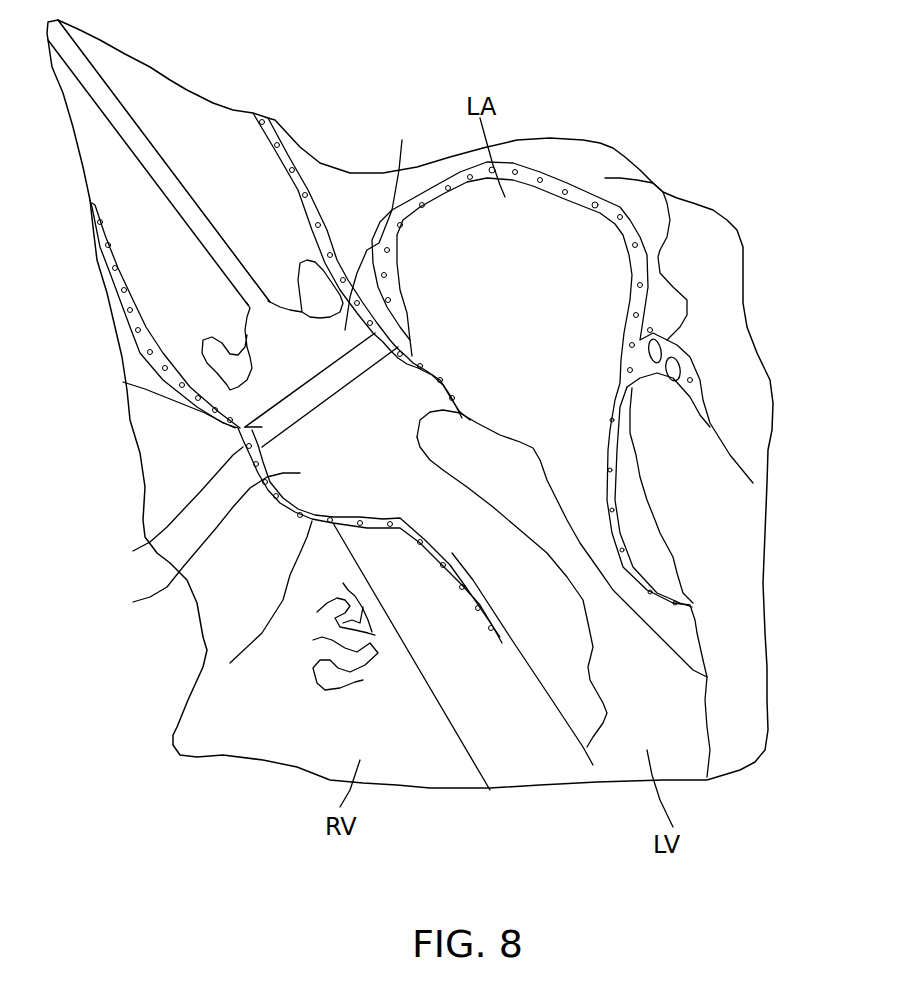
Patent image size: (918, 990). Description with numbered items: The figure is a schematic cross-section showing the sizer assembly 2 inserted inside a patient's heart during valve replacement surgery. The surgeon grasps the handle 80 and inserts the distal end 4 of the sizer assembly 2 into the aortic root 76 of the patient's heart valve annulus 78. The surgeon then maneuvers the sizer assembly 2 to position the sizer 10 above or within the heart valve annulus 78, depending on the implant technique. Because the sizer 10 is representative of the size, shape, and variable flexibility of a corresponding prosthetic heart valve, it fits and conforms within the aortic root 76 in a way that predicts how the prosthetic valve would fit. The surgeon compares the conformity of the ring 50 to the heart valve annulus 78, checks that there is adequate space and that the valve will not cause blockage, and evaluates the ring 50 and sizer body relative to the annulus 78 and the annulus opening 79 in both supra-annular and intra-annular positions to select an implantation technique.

The handle 80 is at (100, 100).
The sizer assembly 2 is at (180, 160).
The aortic root 76 is at (262, 163).
The sizer 10 is at (383, 222).
The ring 50 is at (123, 382).
The distal end 4 is at (328, 412).
The heart valve annulus 78 is at (133, 551).
The annulus opening 79 is at (133, 602).